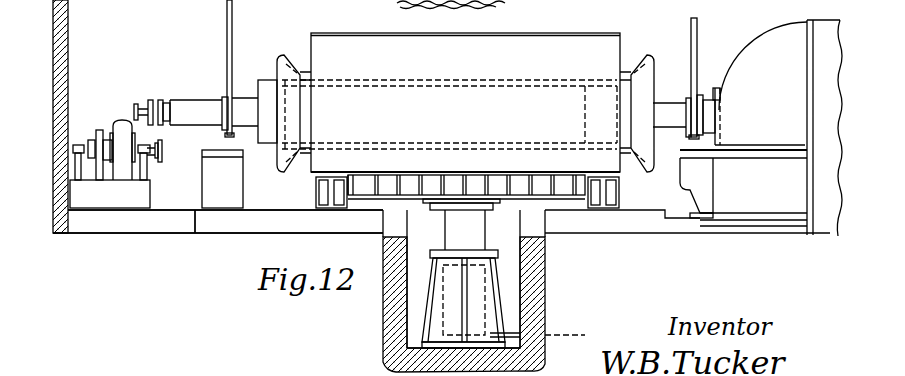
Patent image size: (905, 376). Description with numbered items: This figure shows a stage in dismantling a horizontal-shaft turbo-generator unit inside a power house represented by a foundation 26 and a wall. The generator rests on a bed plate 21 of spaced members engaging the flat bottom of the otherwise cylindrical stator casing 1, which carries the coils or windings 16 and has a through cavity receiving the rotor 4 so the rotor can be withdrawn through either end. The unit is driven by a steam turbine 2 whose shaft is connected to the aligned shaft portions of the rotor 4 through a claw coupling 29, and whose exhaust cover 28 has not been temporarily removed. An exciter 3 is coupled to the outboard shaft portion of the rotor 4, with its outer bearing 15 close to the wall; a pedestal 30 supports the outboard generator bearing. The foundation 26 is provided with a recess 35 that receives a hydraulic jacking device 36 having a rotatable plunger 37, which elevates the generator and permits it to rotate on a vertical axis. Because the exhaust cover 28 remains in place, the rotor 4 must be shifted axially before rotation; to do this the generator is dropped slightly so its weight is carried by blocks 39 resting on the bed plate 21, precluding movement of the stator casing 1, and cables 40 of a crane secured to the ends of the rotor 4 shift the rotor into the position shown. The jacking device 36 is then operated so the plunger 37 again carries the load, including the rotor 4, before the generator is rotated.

The stator casing 1 is at (446, 33).
The steam turbine 2 is at (830, 22).
The exciter 3 is at (120, 121).
The rotor 4 is at (461, 86).
The outer bearing 15 is at (79, 144).
The coils or windings 16 is at (287, 56).
The bed plate 21 is at (226, 232).
The foundation 26 is at (545, 247).
The exhaust cover 28 is at (776, 28).
The claw coupling 29 is at (723, 112).
The pedestal 30 is at (203, 180).
The recess 35 is at (400, 334).
The jacking device 36 is at (493, 266).
The rotatable plunger 37 is at (445, 225).
The blocks 39 is at (316, 197).
The cables 40 is at (233, 18).